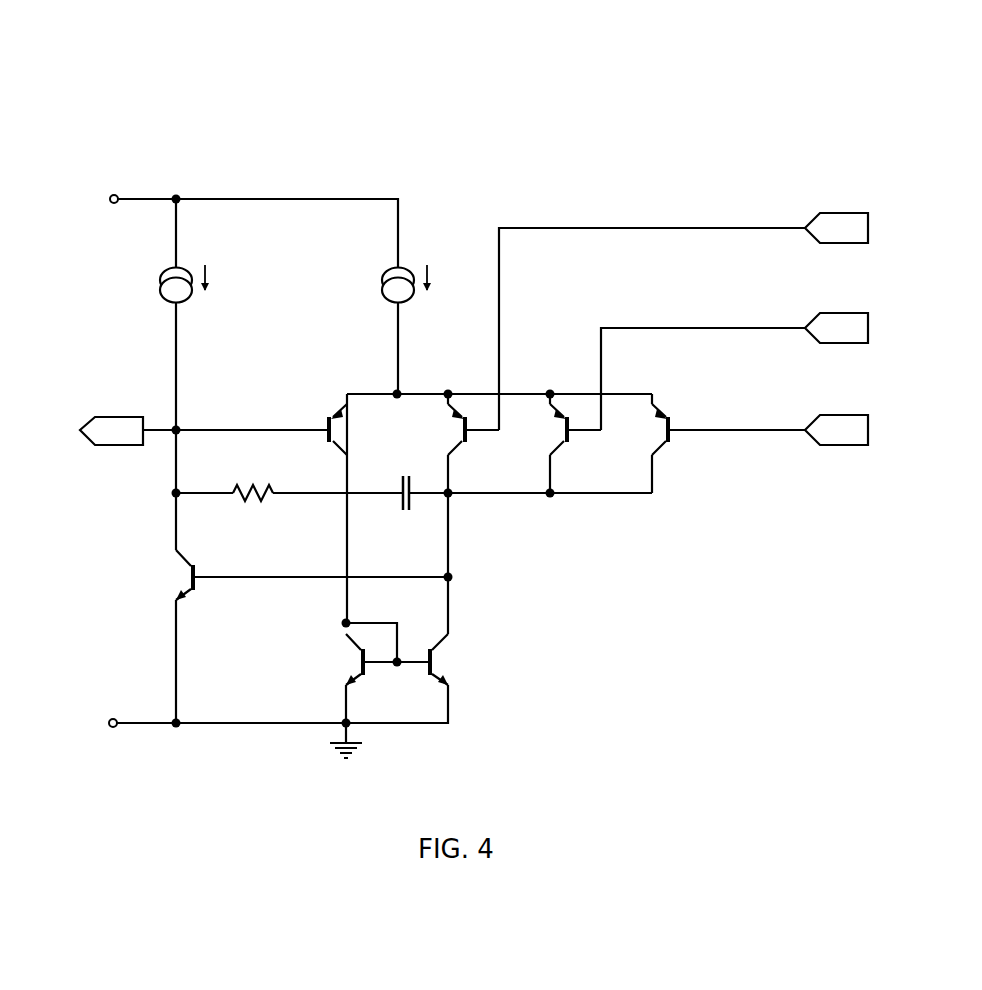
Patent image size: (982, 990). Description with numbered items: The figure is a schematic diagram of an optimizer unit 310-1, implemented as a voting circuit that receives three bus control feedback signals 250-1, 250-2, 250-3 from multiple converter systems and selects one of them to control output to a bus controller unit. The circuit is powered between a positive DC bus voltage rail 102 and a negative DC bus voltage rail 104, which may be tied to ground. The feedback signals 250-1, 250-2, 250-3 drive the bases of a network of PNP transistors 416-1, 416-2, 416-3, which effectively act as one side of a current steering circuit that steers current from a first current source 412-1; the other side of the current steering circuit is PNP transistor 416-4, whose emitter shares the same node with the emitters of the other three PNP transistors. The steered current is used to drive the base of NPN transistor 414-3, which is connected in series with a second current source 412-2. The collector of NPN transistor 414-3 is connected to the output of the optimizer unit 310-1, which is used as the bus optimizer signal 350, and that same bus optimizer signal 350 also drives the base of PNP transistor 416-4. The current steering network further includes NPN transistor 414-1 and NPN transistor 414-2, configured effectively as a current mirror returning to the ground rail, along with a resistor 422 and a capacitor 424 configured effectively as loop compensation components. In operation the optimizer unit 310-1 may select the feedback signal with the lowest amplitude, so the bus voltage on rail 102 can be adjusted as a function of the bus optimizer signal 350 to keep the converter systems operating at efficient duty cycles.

The optimizer unit 310-1 is at (447, 64).
The positive DC bus voltage rail 102 is at (108, 194).
The negative DC bus voltage rail 104 is at (108, 718).
The bus optimizer signal 350 is at (82, 426).
The bus control feedback signal 250-1 is at (812, 218).
The bus control feedback signal 250-2 is at (812, 318).
The bus control feedback signal 250-3 is at (812, 418).
The first current source 412-1 is at (382, 277).
The second current source 412-2 is at (160, 278).
The NPN transistor 414-1 is at (449, 649).
The NPN transistor 414-2 is at (346, 649).
The NPN transistor 414-3 is at (190, 564).
The PNP transistor 416-1 is at (459, 443).
The PNP transistor 416-2 is at (561, 443).
The PNP transistor 416-3 is at (662, 443).
The PNP transistor 416-4 is at (333, 443).
The resistor 422 is at (236, 492).
The capacitor 424 is at (403, 480).